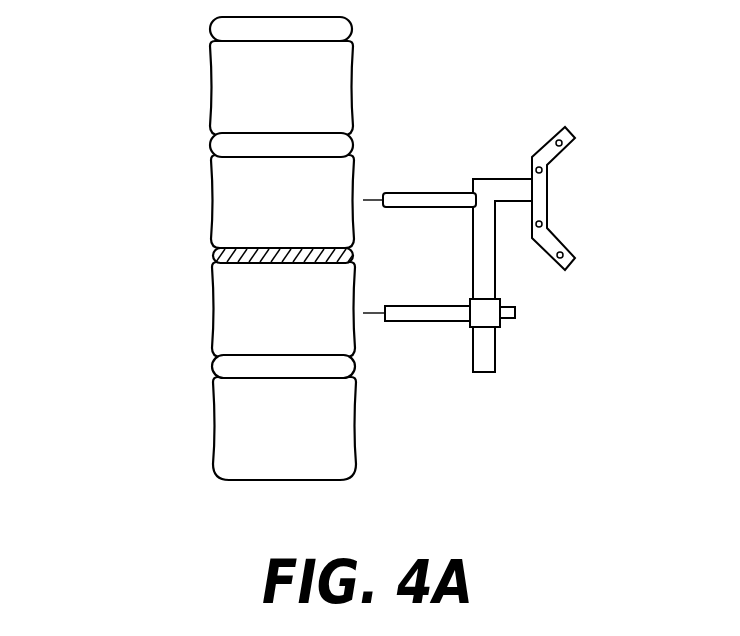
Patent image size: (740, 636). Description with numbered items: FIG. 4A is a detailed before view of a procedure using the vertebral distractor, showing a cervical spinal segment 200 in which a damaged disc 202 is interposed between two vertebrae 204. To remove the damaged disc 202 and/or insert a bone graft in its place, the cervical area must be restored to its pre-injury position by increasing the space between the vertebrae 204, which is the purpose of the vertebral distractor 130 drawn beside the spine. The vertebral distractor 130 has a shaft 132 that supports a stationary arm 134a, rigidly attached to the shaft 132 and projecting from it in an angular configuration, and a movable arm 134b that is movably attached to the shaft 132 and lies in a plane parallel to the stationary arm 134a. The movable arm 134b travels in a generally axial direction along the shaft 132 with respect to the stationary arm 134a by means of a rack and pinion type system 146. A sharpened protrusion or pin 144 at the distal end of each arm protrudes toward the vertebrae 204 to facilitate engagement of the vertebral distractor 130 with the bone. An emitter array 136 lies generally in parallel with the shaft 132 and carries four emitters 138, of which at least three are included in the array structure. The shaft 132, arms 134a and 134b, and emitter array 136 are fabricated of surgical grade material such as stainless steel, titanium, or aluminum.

The cervical spinal segment 200 is at (207, 248).
The damaged disc 202 is at (217, 252).
The vertebrae 204 is at (213, 325).
The vertebral distractor 130 is at (519, 231).
The shaft 132 is at (487, 348).
The stationary arm 134a is at (420, 193).
The movable arm 134b is at (408, 322).
The emitter array 136 is at (596, 160).
The emitters 138 is at (562, 143).
The pin 144 is at (368, 313).
The rack and pinion type system 146 is at (517, 308).